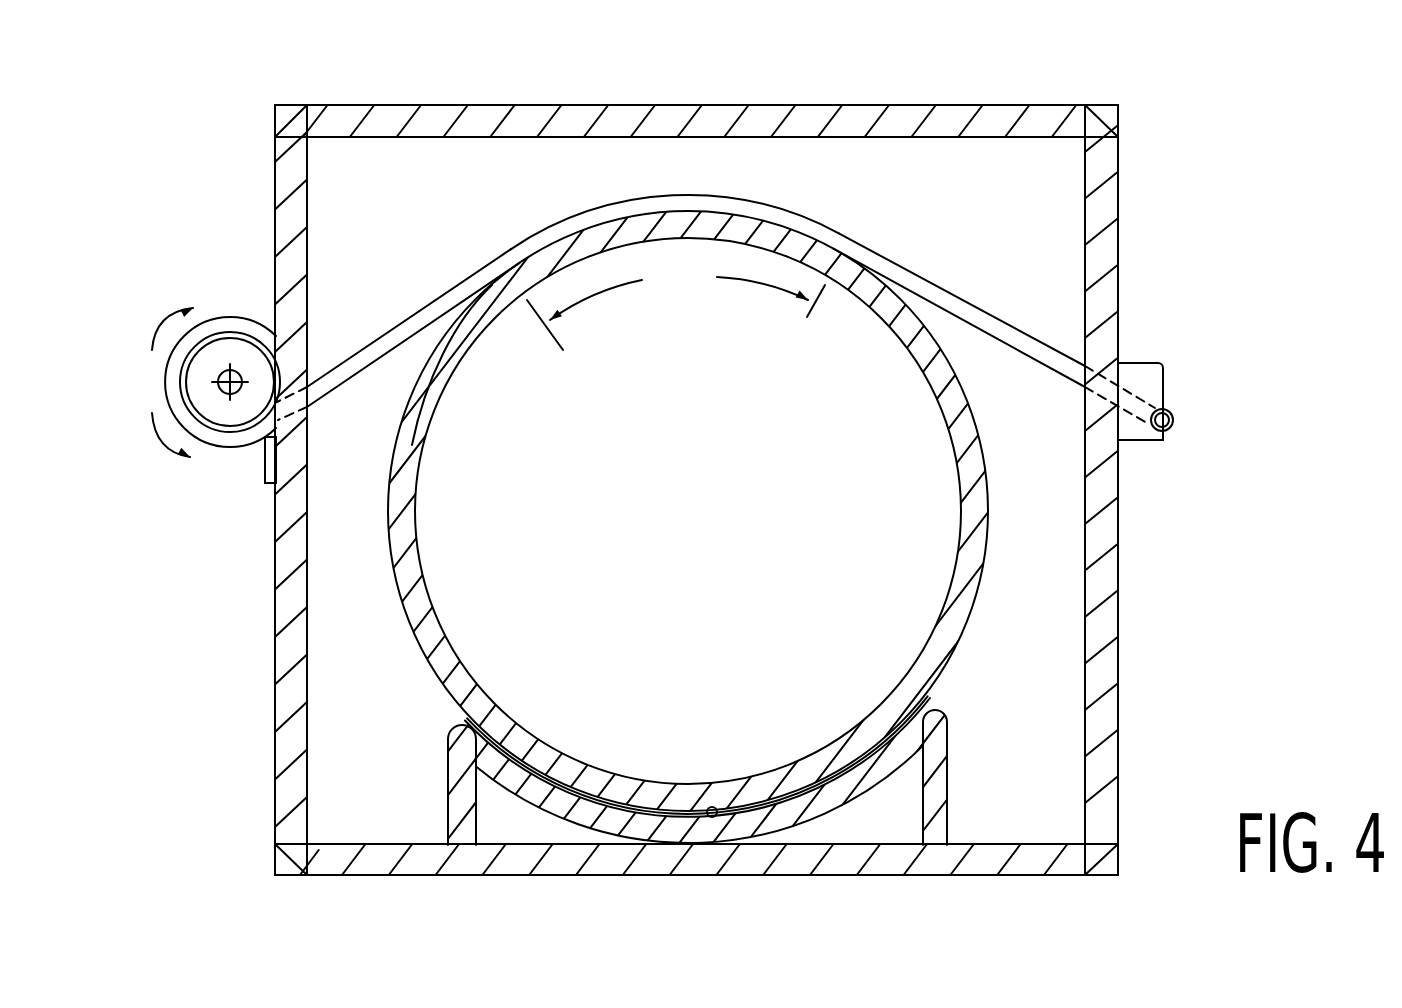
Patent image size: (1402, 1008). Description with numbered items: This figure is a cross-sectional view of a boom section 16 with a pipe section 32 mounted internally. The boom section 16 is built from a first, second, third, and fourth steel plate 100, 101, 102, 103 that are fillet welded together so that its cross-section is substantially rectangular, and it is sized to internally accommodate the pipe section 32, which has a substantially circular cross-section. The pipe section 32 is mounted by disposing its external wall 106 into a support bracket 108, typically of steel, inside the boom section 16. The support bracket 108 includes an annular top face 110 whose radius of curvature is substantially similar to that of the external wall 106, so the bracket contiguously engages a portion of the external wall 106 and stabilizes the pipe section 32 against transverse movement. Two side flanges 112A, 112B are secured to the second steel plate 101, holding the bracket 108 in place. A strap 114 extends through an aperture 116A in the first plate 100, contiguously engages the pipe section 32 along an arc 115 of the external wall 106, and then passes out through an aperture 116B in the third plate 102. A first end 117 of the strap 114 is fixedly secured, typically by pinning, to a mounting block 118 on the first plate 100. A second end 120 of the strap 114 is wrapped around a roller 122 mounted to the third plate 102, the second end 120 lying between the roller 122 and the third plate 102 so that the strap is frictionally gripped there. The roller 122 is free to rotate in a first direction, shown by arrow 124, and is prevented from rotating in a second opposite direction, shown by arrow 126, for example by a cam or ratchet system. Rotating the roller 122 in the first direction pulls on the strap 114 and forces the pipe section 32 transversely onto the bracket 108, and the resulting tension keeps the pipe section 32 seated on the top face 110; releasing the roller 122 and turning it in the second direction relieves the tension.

The boom section 16 is at (848, 100).
The pipe section 32 is at (407, 618).
The first steel plate 100 is at (1107, 262).
The second steel plate 101 is at (995, 860).
The third steel plate 102 is at (277, 562).
The fourth steel plate 103 is at (470, 117).
The external wall 106 is at (985, 553).
The support bracket 108 is at (948, 747).
The annular top face 110 is at (712, 817).
The side flange 112A is at (457, 798).
The side flange 112B is at (927, 810).
The strap 114 is at (933, 287).
The arc 115 is at (676, 304).
The aperture 116A is at (1108, 405).
The aperture 116B is at (290, 423).
The first end 117 is at (1150, 398).
The mounting block 118 is at (1137, 375).
The second end 120 is at (267, 468).
The roller 122 is at (233, 355).
The first direction 124 is at (167, 328).
The second direction 126 is at (162, 430).